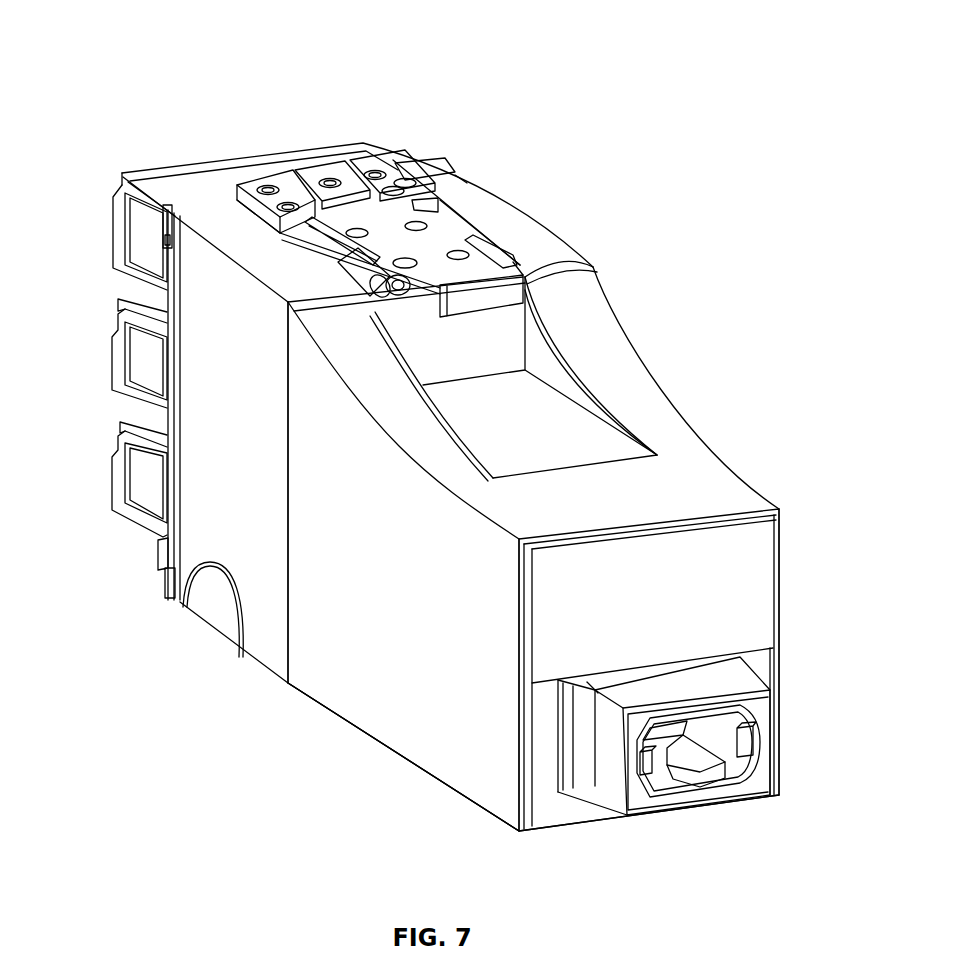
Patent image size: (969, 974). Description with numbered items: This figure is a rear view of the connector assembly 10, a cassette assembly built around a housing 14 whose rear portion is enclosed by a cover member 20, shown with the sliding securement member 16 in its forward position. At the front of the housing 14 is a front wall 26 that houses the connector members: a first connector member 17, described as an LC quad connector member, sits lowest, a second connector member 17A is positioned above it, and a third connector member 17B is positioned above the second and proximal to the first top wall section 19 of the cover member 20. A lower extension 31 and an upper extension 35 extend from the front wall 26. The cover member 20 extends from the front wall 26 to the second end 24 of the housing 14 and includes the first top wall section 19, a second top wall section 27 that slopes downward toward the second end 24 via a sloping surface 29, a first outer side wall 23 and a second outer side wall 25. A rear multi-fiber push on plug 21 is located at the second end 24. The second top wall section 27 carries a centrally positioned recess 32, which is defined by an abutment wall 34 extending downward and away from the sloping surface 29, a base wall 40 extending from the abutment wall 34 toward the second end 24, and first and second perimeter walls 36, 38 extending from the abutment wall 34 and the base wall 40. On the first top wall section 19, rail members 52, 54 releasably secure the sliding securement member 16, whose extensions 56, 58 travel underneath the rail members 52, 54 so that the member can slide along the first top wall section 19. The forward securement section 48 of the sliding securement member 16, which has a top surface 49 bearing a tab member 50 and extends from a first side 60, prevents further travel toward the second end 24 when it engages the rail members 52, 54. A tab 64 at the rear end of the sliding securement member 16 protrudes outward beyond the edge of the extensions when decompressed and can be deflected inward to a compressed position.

The connector assembly 10 is at (418, 76).
The housing 14 is at (172, 596).
The sliding securement member 16 is at (437, 195).
The first connector member 17 is at (140, 487).
The second connector member 17A is at (118, 346).
The third connector member 17B is at (118, 210).
The first top wall section 19 is at (518, 232).
The cover member 20 is at (724, 482).
The rear multi-fiber push on plug 21 is at (610, 776).
The first outer side wall 23 is at (404, 649).
The second end 24 is at (478, 852).
The second outer side wall 25 is at (795, 593).
The front wall 26 is at (428, 185).
The second top wall section 27 is at (672, 398).
The sloping surface 29 is at (369, 398).
The lower extension 31 is at (160, 572).
The recess 32 is at (542, 410).
The abutment wall 34 is at (444, 364).
The upper extension 35 is at (163, 227).
The first perimeter wall 36 is at (452, 410).
The second perimeter wall 38 is at (553, 345).
The base wall 40 is at (556, 448).
The forward securement section 48 is at (407, 182).
The top surface 49 is at (290, 190).
The tab member 50 is at (333, 173).
The rail member 52 is at (357, 267).
The rail member 54 is at (510, 262).
The extension 56 is at (322, 246).
The extension 58 is at (450, 224).
The first side 60 is at (251, 233).
The tab 64 is at (393, 300).